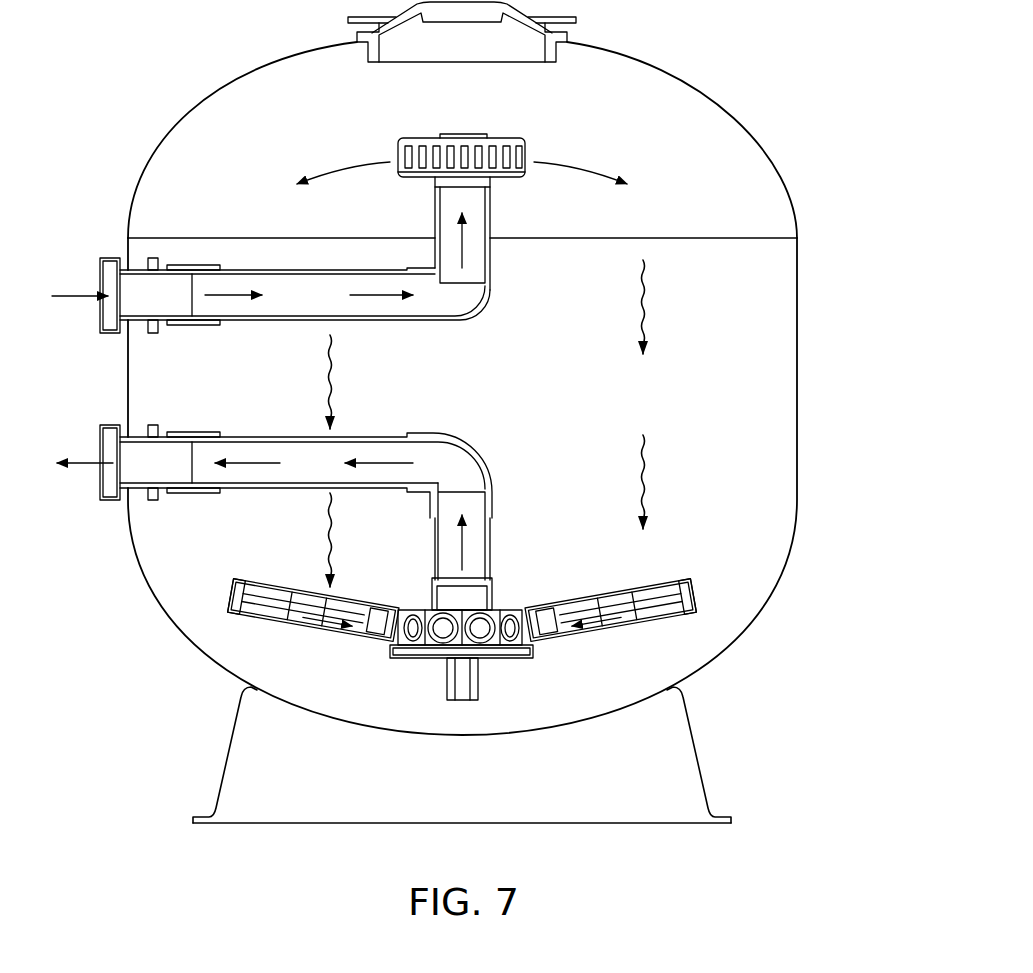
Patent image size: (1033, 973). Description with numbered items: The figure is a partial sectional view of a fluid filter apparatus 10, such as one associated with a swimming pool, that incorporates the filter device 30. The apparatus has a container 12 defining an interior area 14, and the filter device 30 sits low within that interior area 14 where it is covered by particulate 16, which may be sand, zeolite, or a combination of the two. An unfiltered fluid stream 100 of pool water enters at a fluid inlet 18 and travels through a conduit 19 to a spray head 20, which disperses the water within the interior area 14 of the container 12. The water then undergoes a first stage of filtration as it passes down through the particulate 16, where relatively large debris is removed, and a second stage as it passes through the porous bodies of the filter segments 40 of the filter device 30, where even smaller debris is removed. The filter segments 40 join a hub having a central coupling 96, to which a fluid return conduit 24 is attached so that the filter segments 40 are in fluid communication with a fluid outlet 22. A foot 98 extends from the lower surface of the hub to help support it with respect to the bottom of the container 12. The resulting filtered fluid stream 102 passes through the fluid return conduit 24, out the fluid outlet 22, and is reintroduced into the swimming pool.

The fluid filter apparatus 10 is at (462, 412).
The container 12 is at (742, 127).
The interior area 14 is at (620, 113).
The particulate 16 is at (797, 298).
The fluid inlet 18 is at (92, 313).
The conduit 19 is at (492, 224).
The spray head 20 is at (526, 164).
The fluid outlet 22 is at (92, 485).
The fluid return conduit 24 is at (491, 526).
The filter device 30 is at (525, 596).
The filter segments 40 is at (671, 568).
The central coupling 96 is at (494, 578).
The foot 98 is at (481, 684).
The unfiltered fluid stream 100 is at (70, 294).
The filtered fluid stream 102 is at (82, 462).